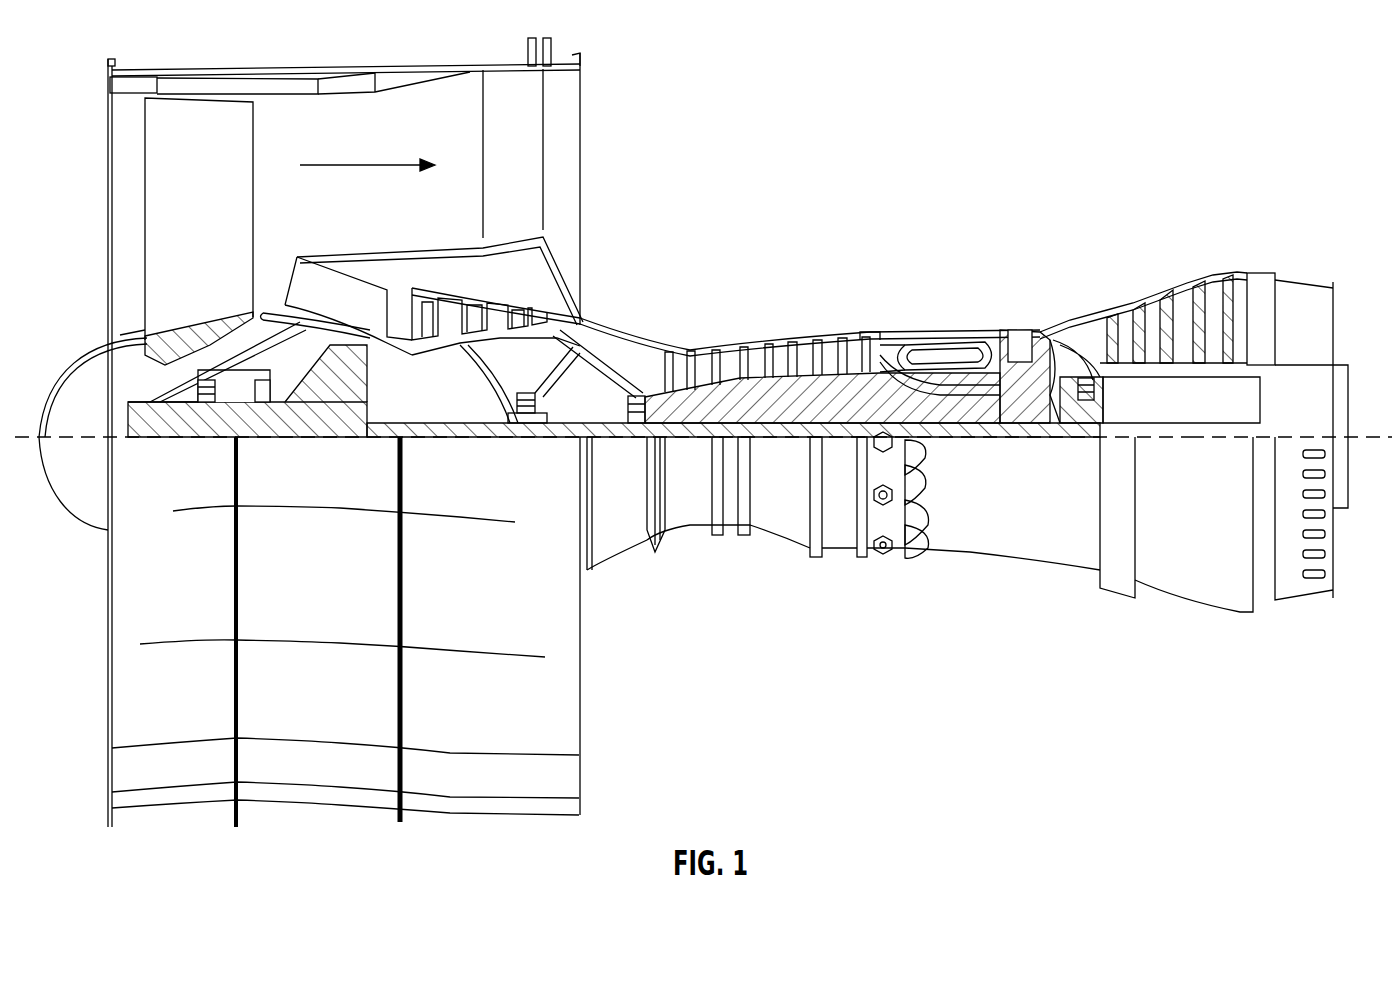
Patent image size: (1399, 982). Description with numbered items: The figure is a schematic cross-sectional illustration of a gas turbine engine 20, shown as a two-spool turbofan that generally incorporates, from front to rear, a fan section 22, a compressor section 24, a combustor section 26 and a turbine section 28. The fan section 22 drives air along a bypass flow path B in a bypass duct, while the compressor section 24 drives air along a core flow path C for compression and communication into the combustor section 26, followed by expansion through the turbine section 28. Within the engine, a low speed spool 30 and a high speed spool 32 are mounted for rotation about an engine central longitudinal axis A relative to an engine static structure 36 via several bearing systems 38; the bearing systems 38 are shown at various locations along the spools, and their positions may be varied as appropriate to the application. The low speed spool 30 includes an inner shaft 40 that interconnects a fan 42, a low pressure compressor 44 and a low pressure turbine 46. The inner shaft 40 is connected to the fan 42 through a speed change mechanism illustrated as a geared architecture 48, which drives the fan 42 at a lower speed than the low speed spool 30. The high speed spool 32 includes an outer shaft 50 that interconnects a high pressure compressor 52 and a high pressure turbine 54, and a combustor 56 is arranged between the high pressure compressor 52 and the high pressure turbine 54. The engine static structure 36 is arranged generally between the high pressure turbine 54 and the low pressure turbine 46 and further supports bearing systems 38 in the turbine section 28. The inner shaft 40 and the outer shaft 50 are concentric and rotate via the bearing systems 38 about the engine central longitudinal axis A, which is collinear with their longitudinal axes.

The gas turbine engine 20 is at (1152, 107).
The fan section 22 is at (342, 30).
The compressor section 24 is at (768, 296).
The combustor section 26 is at (938, 296).
The turbine section 28 is at (1083, 277).
The low speed spool 30 is at (802, 438).
The high speed spool 32 is at (870, 355).
The engine static structure 36 is at (842, 555).
The bearing systems 38 is at (205, 400).
The inner shaft 40 is at (598, 440).
The fan 42 is at (212, 219).
The low pressure compressor 44 is at (494, 314).
The low pressure turbine 46 is at (1185, 288).
The geared architecture 48 is at (340, 418).
The outer shaft 50 is at (968, 438).
The high pressure compressor 52 is at (736, 355).
The high pressure turbine 54 is at (1022, 330).
The combustor 56 is at (945, 348).
The engine central longitudinal axis A is at (1360, 425).
The bypass flow path B is at (362, 165).
The core flow path C is at (299, 296).